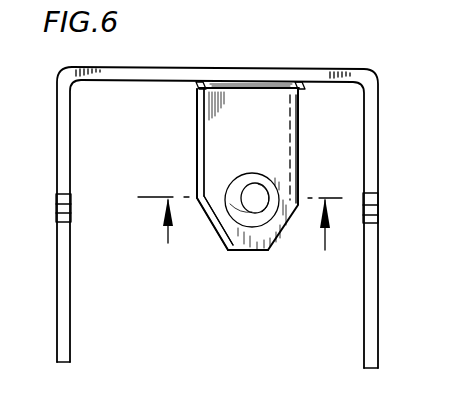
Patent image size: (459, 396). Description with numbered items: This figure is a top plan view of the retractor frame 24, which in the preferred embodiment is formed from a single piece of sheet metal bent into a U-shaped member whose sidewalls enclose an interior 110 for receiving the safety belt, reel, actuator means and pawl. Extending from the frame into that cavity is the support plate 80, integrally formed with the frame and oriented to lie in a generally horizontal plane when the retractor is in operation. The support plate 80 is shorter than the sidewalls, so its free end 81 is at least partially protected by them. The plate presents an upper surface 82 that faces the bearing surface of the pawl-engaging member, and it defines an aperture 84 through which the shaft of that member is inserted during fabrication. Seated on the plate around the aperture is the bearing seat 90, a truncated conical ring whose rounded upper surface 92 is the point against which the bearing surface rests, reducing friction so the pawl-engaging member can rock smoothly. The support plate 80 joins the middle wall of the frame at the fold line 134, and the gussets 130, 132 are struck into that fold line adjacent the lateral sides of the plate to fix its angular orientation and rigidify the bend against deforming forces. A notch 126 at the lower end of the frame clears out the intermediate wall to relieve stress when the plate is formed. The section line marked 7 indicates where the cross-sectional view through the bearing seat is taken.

The retractor frame 24 is at (201, 17).
The notch 126 is at (57, 208).
The fold line 134 is at (280, 46).
The gusset 132 is at (198, 86).
The gusset 130 is at (301, 88).
The support plate 80 is at (190, 163).
The upper surface 82 is at (197, 128).
The bearing seat 90 is at (234, 212).
The free end 81 is at (252, 254).
The aperture 84 is at (260, 184).
The upper surface 92 is at (252, 192).
The section line 7- 7 is at (241, 224).
The interior 110 is at (225, 348).